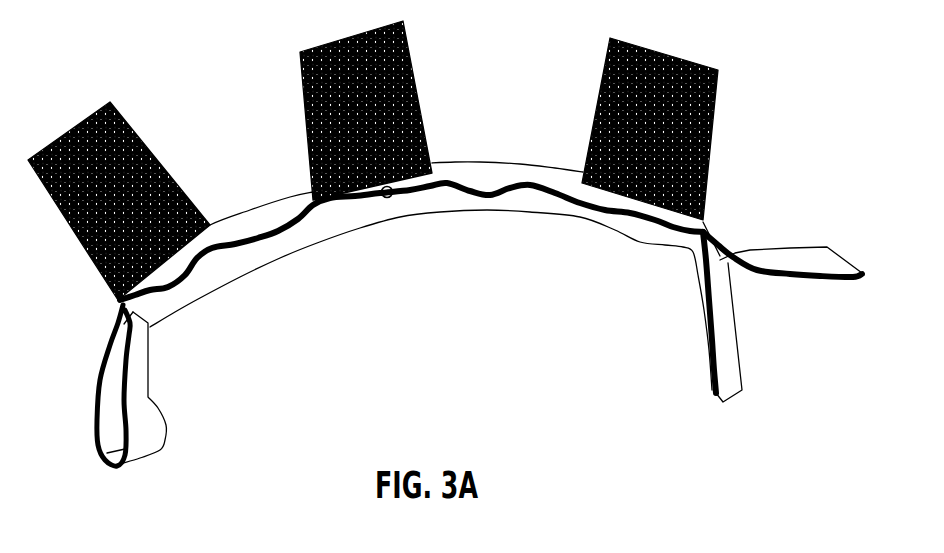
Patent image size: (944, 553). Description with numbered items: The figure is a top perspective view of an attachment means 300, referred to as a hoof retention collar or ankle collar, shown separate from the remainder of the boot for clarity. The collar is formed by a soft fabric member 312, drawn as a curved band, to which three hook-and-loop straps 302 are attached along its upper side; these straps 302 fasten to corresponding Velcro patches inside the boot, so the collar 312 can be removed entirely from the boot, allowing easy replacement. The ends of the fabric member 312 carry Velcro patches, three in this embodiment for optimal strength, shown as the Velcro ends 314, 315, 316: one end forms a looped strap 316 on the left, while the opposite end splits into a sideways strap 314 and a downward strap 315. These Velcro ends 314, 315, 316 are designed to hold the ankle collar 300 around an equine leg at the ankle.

The attachment means 300 is at (450, 236).
The hook-and-loop straps 302 is at (128, 124).
The soft fabric member 312 is at (487, 210).
The Velcro end patch 314 is at (828, 280).
The Velcro end patch 315 is at (743, 380).
The Velcro end patch 316 is at (150, 397).